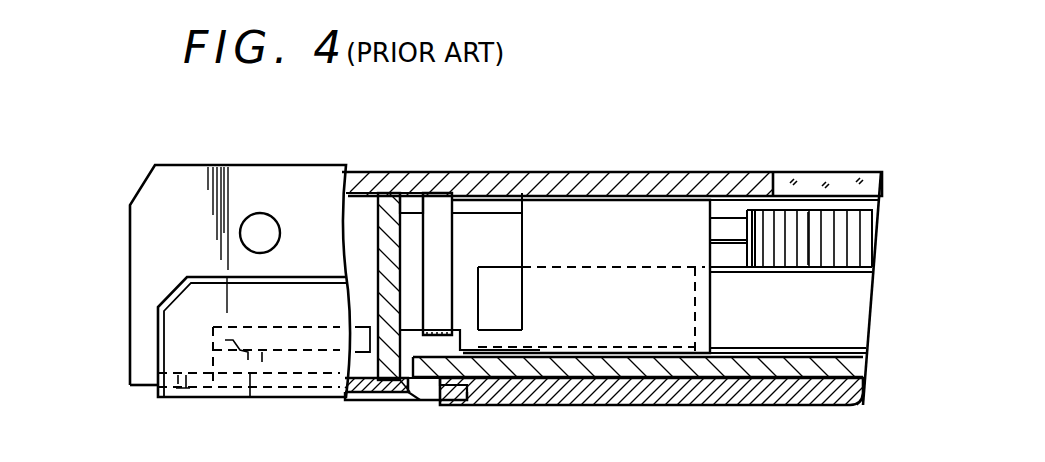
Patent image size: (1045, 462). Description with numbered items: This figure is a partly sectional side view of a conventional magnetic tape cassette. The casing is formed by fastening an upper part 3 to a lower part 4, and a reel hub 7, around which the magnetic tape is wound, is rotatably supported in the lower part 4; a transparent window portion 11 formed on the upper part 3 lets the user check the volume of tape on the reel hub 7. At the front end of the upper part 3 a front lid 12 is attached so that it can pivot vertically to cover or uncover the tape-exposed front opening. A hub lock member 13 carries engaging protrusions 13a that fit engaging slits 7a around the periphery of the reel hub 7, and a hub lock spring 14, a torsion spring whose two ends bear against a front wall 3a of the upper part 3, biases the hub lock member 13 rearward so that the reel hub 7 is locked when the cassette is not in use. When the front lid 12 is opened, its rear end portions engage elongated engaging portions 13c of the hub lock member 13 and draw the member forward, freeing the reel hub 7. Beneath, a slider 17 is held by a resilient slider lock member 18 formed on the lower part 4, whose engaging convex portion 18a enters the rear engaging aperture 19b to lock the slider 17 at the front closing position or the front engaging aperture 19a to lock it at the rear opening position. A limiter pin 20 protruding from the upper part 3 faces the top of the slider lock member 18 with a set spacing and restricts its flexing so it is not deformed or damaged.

The upper part 3 is at (544, 186).
The front wall 3a is at (382, 196).
The lower part 4 is at (762, 405).
The reel hub 7 is at (752, 222).
The engaging slit 7a is at (812, 222).
The transparent window portion 11 is at (858, 182).
The front lid 12 is at (147, 266).
The hub lock member 13 is at (592, 216).
The engaging protrusion 13a is at (728, 225).
The engaging portion 13c is at (250, 398).
The hub lock spring 14 is at (485, 206).
The slider 17 is at (665, 405).
The slider lock member 18 is at (562, 370).
The engaging convex portion 18a is at (433, 396).
The front engaging aperture 19a is at (182, 398).
The rear engaging aperture 19b is at (400, 396).
The limiter pin 20 is at (430, 228).